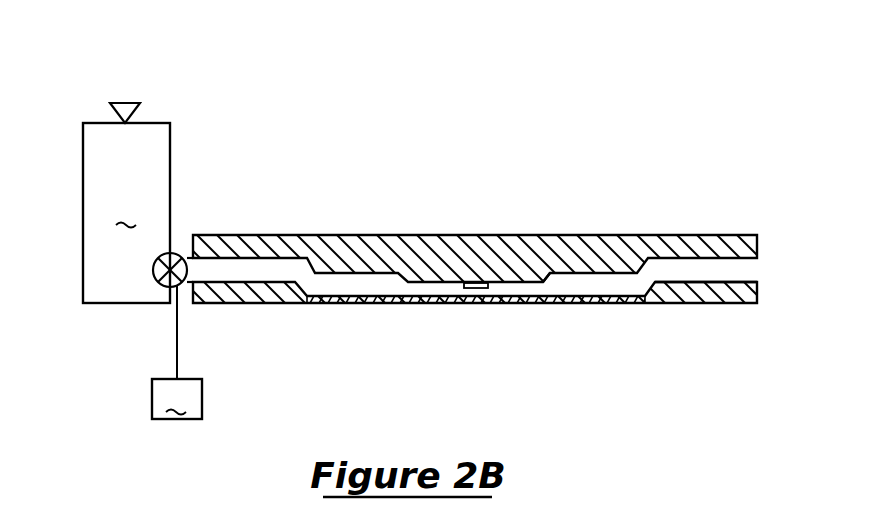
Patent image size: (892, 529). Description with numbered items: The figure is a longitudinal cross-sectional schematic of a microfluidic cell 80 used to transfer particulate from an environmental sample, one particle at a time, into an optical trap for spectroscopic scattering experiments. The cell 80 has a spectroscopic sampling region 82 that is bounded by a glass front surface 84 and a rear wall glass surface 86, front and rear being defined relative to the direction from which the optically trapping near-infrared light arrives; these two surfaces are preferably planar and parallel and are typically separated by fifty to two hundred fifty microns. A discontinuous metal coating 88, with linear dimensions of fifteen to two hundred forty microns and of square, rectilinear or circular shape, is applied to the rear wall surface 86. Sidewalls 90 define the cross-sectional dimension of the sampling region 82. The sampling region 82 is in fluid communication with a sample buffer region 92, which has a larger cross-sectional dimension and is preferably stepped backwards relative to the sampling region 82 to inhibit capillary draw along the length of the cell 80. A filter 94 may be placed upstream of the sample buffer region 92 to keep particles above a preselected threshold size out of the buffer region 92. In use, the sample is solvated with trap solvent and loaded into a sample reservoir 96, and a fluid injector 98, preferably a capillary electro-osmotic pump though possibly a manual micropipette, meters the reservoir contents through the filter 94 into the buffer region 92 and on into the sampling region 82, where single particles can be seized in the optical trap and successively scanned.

The microfluidic cell 80 is at (475, 226).
The spectroscopic sampling region 82 is at (538, 228).
The glass front surface 84 is at (578, 303).
The rear wall glass surface 86 is at (528, 280).
The discontinuous metal coating 88 is at (474, 289).
The sidewalls 90 is at (372, 283).
The sample buffer region 92 is at (193, 228).
The filter 94 is at (126, 110).
The sample reservoir 96 is at (138, 213).
The fluid injector 98 is at (177, 352).